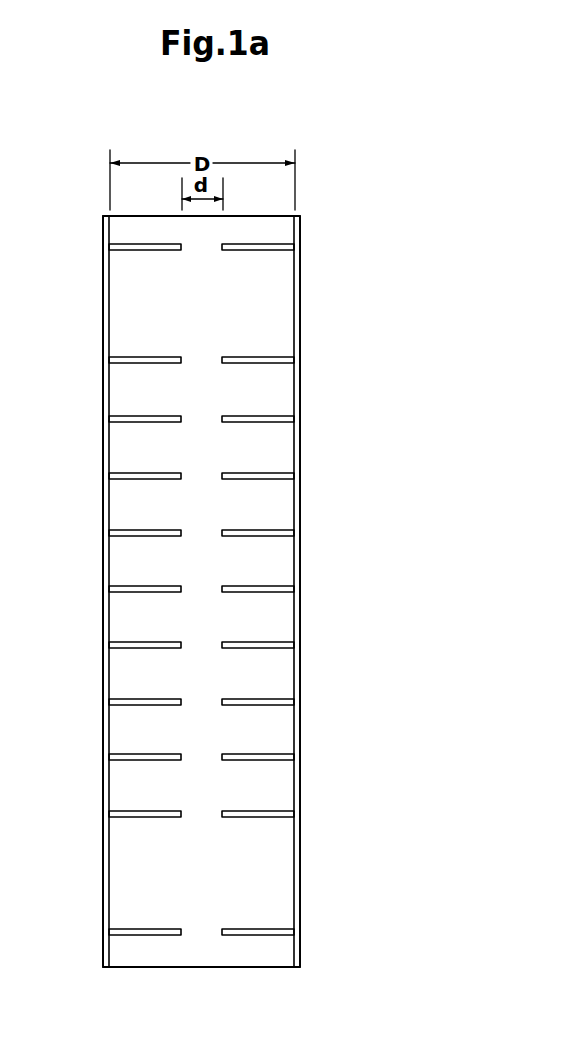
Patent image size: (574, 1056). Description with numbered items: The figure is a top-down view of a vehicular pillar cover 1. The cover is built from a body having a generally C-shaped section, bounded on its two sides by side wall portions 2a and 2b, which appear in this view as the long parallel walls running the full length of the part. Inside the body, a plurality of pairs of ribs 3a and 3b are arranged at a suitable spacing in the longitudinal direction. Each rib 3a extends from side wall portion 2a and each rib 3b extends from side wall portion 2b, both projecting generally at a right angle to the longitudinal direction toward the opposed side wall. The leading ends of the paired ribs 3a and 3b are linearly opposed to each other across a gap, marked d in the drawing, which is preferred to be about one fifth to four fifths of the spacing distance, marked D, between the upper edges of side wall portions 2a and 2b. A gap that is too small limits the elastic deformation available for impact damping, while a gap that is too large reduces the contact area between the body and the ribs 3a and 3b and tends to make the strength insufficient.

The vehicular pillar cover 1 is at (198, 540).
The side wall portion 2a is at (300, 673).
The side wall portion 2b is at (103, 663).
The rib 3a is at (253, 530).
The rib 3b is at (140, 473).